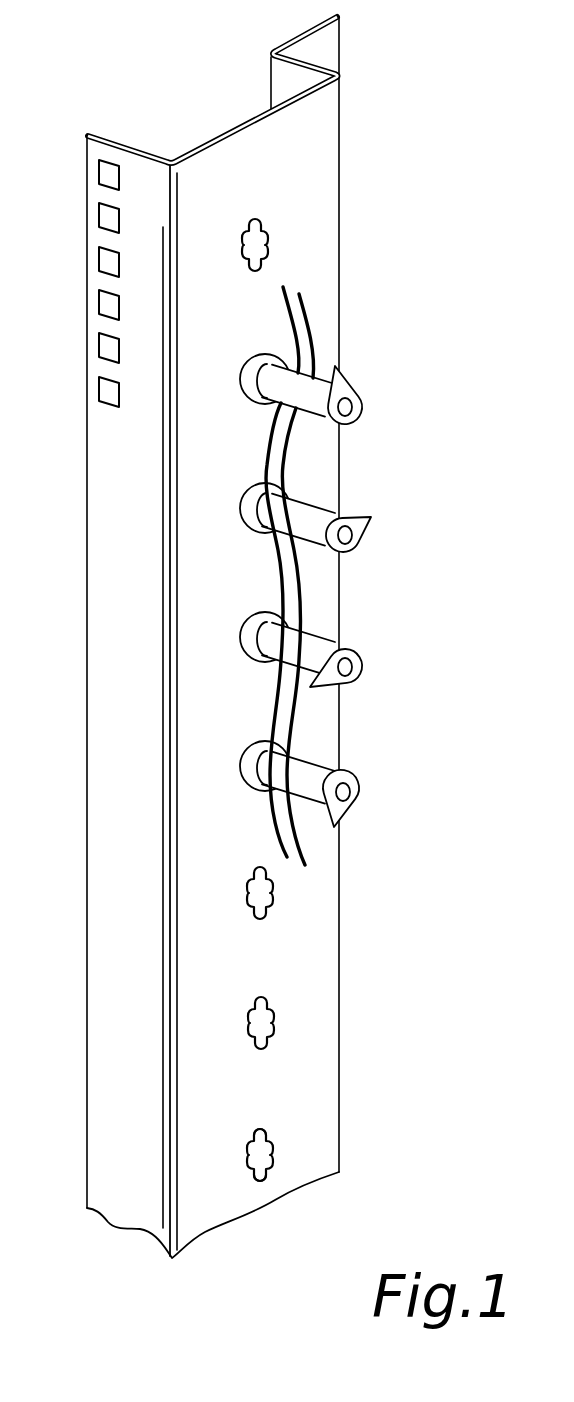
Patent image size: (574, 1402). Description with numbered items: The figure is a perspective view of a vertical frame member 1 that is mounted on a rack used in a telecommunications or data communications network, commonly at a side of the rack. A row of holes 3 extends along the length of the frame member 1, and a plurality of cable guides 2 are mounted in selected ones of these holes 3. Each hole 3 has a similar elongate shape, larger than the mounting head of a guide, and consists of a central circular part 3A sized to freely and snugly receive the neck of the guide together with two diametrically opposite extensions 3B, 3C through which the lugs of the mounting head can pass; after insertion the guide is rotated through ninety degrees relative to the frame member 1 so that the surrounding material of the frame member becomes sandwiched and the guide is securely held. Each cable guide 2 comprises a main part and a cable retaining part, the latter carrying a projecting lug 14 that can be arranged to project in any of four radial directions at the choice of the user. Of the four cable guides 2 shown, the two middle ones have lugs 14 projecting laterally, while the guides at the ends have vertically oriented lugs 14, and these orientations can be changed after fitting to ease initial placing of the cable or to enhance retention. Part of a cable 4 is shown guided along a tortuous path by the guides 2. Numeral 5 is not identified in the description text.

The vertical frame member 1 is at (325, 170).
The cable guide 2 is at (307, 579).
The hole 3 is at (260, 894).
The central circular part 3A is at (273, 1150).
The extension 3B is at (267, 1133).
The extension 3C is at (263, 1178).
The cable 4 is at (300, 712).
The stud 5 is at (282, 391).
The projecting lug 14 is at (355, 390).